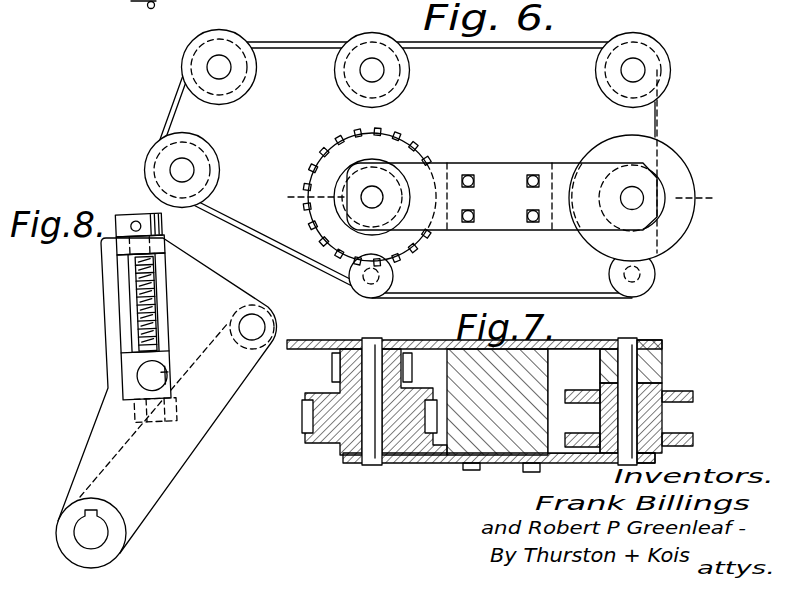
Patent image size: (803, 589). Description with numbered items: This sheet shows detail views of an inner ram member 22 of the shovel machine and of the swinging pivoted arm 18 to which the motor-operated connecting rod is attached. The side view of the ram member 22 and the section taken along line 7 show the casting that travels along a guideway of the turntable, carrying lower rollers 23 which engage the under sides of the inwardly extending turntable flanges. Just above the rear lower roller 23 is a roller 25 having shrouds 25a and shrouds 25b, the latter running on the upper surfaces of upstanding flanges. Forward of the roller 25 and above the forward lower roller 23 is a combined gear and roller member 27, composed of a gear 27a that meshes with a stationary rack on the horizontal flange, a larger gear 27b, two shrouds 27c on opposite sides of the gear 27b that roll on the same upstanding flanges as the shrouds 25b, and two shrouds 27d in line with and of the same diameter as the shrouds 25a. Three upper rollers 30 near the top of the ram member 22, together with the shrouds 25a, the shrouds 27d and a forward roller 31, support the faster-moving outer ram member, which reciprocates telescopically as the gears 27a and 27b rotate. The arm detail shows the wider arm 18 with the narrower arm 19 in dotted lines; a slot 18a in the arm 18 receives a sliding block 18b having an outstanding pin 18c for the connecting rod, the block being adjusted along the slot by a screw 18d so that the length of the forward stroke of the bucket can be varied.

In FIG. 6, the section line 7- 7 is at (500, 200).
In FIG. 8, the swinging arm 18 is at (107, 362).
In FIG. 8, the slot 18a is at (128, 309).
In FIG. 8, the sliding block 18b is at (132, 373).
In FIG. 8, the outstanding pin 18c is at (168, 377).
In FIG. 8, the screw 18d is at (132, 279).
In FIG. 8, the swinging arm 19 is at (102, 479).
In FIG. 6, the ram member 22 is at (659, 126).
In FIG. 7, the ram member 22 is at (588, 343).
In FIG. 6, the lower roller 23 is at (363, 282).
In FIG. 6, the roller 25 is at (677, 158).
In FIG. 7, the roller 25 is at (664, 412).
In FIG. 7, the shroud 25a is at (694, 398).
In FIG. 7, the shroud 25b is at (663, 391).
In FIG. 6, the combined gear and roller member 27 is at (410, 152).
In FIG. 7, the combined gear and roller member 27 is at (396, 428).
In FIG. 6, the gear 27a is at (362, 171).
In FIG. 7, the gear 27a is at (408, 362).
In FIG. 6, the gear 27b is at (341, 137).
In FIG. 7, the gear 27b is at (303, 422).
In FIG. 7, the shroud 27c is at (334, 387).
In FIG. 6, the shroud 27d is at (313, 166).
In FIG. 7, the shroud 27d is at (310, 397).
In FIG. 6, the upper roller 30 is at (249, 91).
In FIG. 6, the forward roller 31 is at (146, 151).